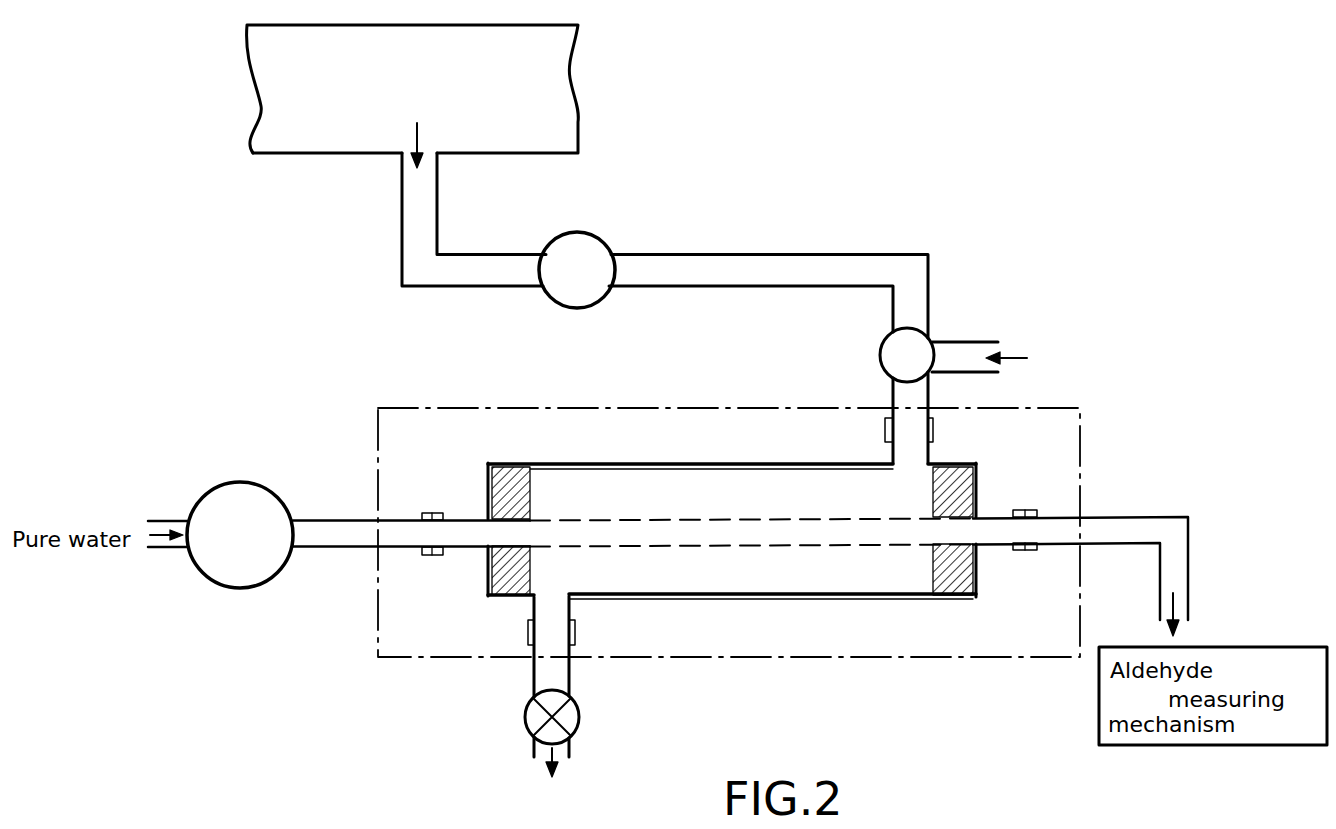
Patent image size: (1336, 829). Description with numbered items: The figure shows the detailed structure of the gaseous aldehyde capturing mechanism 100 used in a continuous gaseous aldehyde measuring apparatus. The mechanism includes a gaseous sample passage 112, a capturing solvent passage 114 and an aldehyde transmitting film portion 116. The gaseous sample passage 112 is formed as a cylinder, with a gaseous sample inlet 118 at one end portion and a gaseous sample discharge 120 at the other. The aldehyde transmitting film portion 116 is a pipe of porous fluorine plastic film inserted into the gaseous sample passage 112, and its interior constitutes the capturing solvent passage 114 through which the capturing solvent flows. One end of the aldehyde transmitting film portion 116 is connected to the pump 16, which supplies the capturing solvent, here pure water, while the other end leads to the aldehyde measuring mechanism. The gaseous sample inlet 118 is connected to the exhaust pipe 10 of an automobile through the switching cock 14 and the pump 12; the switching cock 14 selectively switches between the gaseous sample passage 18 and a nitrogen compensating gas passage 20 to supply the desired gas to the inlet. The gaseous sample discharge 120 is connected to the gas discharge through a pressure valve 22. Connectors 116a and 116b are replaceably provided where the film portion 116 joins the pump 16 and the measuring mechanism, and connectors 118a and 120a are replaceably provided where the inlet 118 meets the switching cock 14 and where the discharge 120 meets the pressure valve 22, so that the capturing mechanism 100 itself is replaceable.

The exhaust pipe 10 is at (553, 153).
The pump 12 is at (598, 247).
The switching cock 14 is at (880, 353).
The pump 16 is at (240, 588).
The gaseous sample passage 18 is at (818, 253).
The nitrogen gas passage 20 is at (977, 340).
The pressure valve 22 is at (525, 715).
The gaseous aldehyde capturing mechanism 100 is at (850, 657).
The gaseous sample passage 112 is at (737, 509).
The capturing solvent passage 114 is at (835, 534).
The aldehyde transmitting film portion 116 is at (652, 545).
The connector 116a is at (430, 556).
The connector 116b is at (1027, 551).
The gaseous sample inlet 118 is at (921, 461).
The connector 118a is at (884, 430).
The gaseous sample discharge 120 is at (538, 597).
The connector 120a is at (576, 631).